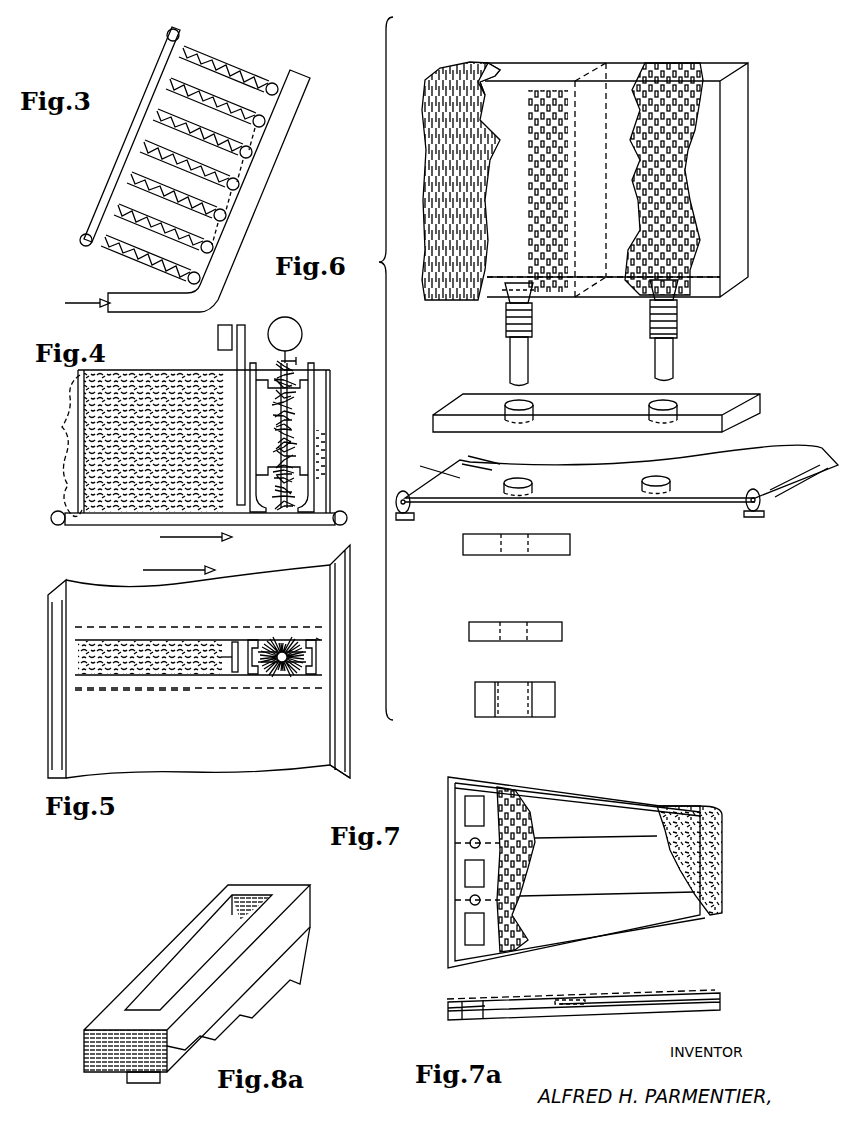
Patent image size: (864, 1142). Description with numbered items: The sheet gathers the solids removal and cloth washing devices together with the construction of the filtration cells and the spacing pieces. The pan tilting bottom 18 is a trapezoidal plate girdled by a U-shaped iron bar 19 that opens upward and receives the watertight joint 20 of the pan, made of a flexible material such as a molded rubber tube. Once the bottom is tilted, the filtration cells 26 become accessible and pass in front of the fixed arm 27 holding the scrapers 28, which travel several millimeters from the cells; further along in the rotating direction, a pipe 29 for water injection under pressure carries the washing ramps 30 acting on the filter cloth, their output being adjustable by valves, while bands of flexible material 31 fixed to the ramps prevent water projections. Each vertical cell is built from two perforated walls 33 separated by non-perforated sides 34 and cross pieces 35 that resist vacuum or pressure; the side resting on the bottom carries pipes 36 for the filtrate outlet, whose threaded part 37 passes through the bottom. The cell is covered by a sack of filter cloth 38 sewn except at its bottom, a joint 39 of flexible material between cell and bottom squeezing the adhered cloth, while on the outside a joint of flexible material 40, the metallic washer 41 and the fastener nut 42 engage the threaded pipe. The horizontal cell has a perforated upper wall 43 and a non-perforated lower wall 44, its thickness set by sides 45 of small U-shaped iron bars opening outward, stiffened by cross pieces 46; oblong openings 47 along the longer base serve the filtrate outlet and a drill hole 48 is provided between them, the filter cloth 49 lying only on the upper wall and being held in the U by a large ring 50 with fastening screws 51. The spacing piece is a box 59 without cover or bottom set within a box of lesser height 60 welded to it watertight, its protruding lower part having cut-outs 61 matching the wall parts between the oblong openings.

In FIG. 3, the pan tilting bottom 18 is at (120, 152).
In FIG. 4, the pan tilting bottom 18 is at (96, 525).
In FIG. 5, the pan tilting bottom 18 is at (290, 762).
In FIG. 6, the pan tilting bottom 18 is at (707, 500).
In FIG. 3, the U-shaped iron bar 19 is at (80, 245).
In FIG. 4, the U-shaped iron bar 19 is at (58, 526).
In FIG. 5, the U-shaped iron bar 19 is at (336, 768).
In FIG. 6, the U-shaped iron bar 19 is at (766, 507).
In FIG. 3, the watertight joint 20 is at (85, 246).
In FIG. 4, the watertight joint 20 is at (51, 522).
In FIG. 5, the watertight joint 20 is at (337, 690).
In FIG. 6, the watertight joint 20 is at (753, 512).
In FIG. 3, the filtration cells 26 is at (172, 62).
In FIG. 4, the filtration cells 26 is at (196, 456).
In FIG. 5, the filtration cells 26 is at (230, 626).
In FIG. 4, the fixed arm 27 is at (218, 340).
In FIG. 4, the scrapers 28 is at (246, 342).
In FIG. 5, the scrapers 28 is at (236, 673).
In FIG. 3, the pipe for water injection 29 is at (240, 218).
In FIG. 4, the pipe for water injection 29 is at (298, 328).
In FIG. 3, the washing ramps 30 is at (246, 70).
In FIG. 4, the washing ramps 30 is at (290, 392).
In FIG. 5, the washing ramps 30 is at (282, 680).
In FIG. 4, the bands of flexible material 31 is at (258, 465).
In FIG. 5, the bands of flexible material 31 is at (316, 640).
In FIG. 6, the perforated walls 33 is at (545, 90).
In FIG. 6, the non-perforated sides 34 is at (738, 105).
In FIG. 6, the cross pieces 35 is at (582, 78).
In FIG. 6, the pipes for filtrate outlet 36 is at (675, 365).
In FIG. 6, the threaded part 37 is at (678, 321).
In FIG. 4, the filter cloth sack 38 is at (322, 470).
In FIG. 5, the filter cloth sack 38 is at (136, 692).
In FIG. 6, the filter cloth sack 38 is at (450, 72).
In FIG. 6, the joint 39 is at (760, 403).
In FIG. 6, the joint of flexible material 40 is at (570, 545).
In FIG. 6, the metallic washer 41 is at (562, 630).
In FIG. 6, the fastener nut 42 is at (555, 700).
In FIG. 7, the perforated upper wall 43 is at (508, 790).
In FIG. 7, the non-perforated lower wall 44 is at (596, 820).
In FIG. 7A, the non-perforated lower wall 44 is at (630, 1012).
In FIG. 7, the sides 45 is at (572, 795).
In FIG. 7A, the sides 45 is at (725, 993).
In FIG. 7, the cross pieces 46 is at (626, 838).
In FIG. 7, the oblong openings 47 is at (474, 812).
In FIG. 7A, the oblong openings 47 is at (472, 1016).
In FIG. 7, the drill hole 48 is at (470, 844).
In FIG. 7, the filter cloth 49 is at (680, 810).
In FIG. 7A, the large ring 50 is at (665, 1002).
In FIG. 7A, the fastening screws 51 is at (566, 1007).
In FIG. 8A, the box 59 is at (150, 1083).
In FIG. 8A, the box of lesser height 60 is at (300, 918).
In FIG. 8A, the cut-outs 61 is at (235, 1000).